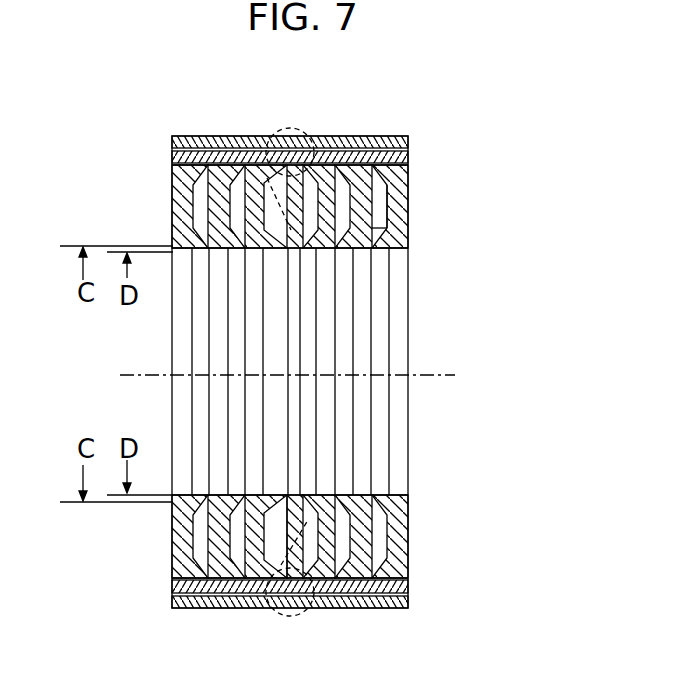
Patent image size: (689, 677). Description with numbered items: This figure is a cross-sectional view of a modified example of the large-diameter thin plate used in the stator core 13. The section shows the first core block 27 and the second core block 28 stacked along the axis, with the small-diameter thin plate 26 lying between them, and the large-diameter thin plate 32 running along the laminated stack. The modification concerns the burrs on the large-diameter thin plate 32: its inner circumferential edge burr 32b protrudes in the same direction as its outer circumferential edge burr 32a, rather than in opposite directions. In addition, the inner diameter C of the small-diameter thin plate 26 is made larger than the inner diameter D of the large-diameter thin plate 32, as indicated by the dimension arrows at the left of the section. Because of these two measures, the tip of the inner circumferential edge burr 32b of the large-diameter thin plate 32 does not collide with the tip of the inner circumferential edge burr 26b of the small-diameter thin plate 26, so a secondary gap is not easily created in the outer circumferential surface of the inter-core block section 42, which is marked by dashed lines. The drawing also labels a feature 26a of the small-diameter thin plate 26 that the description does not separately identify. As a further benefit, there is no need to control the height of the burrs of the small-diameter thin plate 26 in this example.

The stator core 13 is at (452, 123).
The small-diameter thin plate 26 is at (289, 136).
The first magnet portion 26a is at (268, 557).
The inner circumferential edge burr of the small-diameter thin plate 26b is at (287, 521).
The first core block 27 is at (283, 124).
The second core block 28 is at (408, 124).
The large-diameter thin plate 32 is at (408, 287).
The outer circumferential edge burr 32a is at (381, 190).
The inner circumferential edge burr 32b is at (377, 229).
The inter-core block section 42 is at (306, 540).